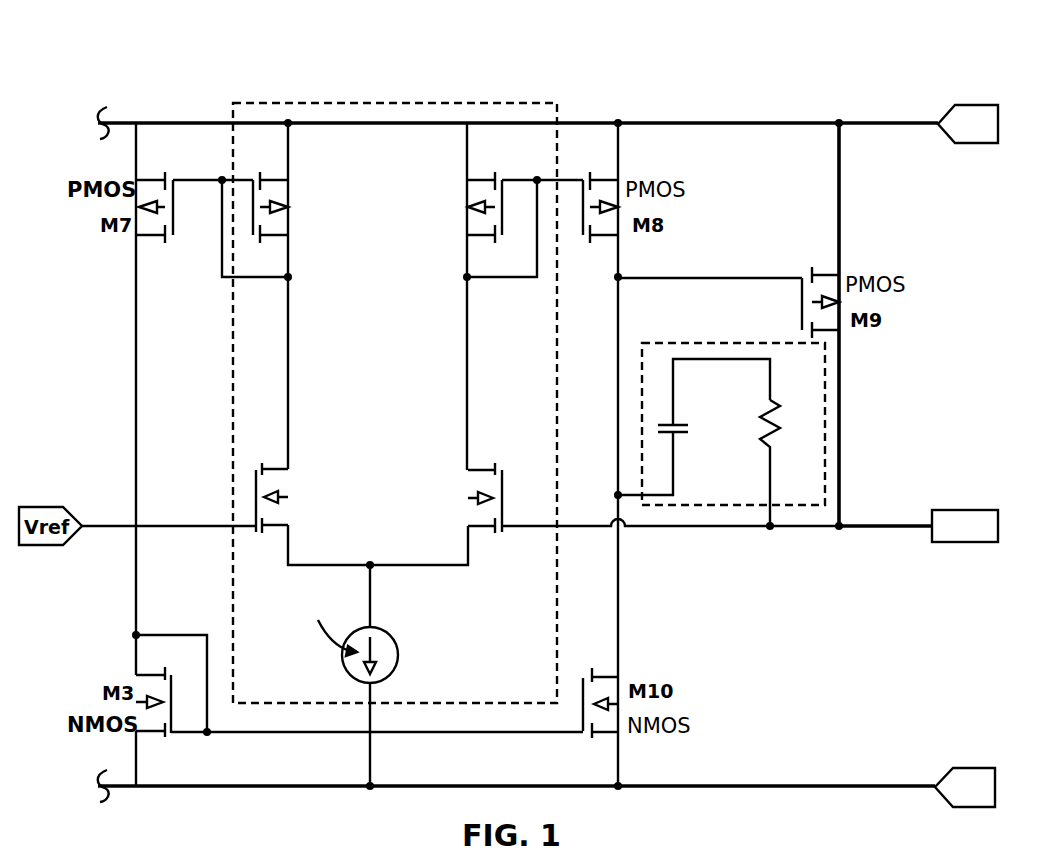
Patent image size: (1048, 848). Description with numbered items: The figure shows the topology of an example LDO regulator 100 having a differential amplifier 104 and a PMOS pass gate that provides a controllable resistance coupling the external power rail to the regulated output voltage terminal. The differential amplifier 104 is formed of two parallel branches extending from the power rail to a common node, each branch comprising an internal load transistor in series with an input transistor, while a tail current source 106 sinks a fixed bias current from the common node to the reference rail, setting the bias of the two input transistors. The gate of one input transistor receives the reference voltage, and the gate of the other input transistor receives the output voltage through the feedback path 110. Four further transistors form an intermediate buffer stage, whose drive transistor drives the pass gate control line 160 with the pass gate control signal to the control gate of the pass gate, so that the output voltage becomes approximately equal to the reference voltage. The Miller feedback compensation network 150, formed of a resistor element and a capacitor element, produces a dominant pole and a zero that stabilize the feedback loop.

The LDO regulator 100 is at (683, 82).
The differential amplifier 104 is at (442, 103).
The tail current source 106 is at (397, 647).
The feedback path 110 is at (690, 528).
The Miller feedback compensation network 150 is at (687, 343).
The pass gate control line 160 is at (712, 278).